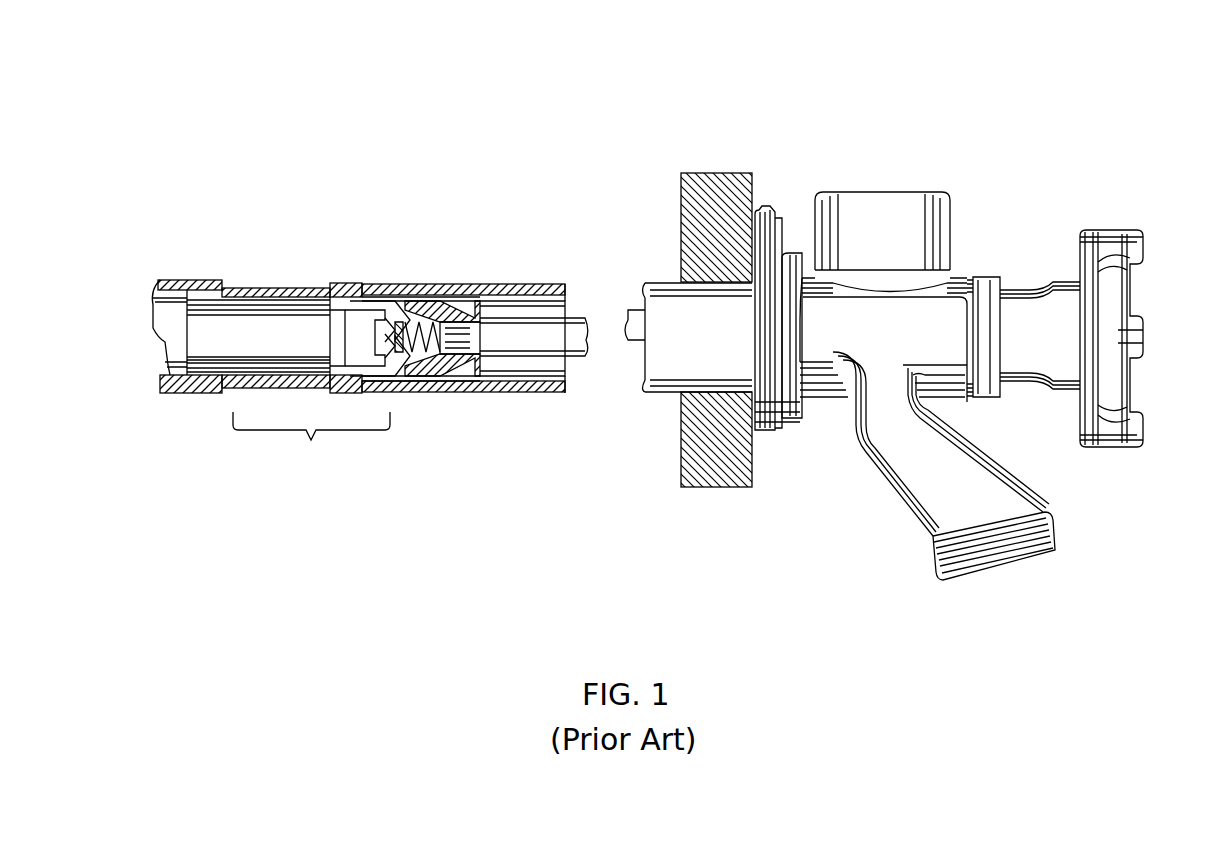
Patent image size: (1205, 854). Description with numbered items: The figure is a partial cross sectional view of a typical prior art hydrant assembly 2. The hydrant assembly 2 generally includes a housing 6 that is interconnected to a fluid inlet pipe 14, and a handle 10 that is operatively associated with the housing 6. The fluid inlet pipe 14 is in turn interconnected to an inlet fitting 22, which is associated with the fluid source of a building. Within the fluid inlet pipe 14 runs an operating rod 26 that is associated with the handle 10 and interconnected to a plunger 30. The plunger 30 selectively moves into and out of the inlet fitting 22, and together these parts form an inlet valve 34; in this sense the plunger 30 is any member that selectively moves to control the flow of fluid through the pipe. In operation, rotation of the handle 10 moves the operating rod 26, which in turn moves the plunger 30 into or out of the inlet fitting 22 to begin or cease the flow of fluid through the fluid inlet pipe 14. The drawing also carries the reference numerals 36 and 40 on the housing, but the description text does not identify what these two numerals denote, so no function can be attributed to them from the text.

The hydrant assembly 2 is at (634, 335).
The housing 6 is at (882, 311).
The handle 10 is at (1122, 440).
The fluid inlet pipe 14 is at (427, 388).
The inlet fitting 22 is at (263, 285).
The operating rod 26 is at (537, 341).
The plunger 30 is at (427, 325).
The inlet valve 34 is at (311, 450).
The spout 36 is at (920, 480).
The bonnet cap 40 is at (868, 225).